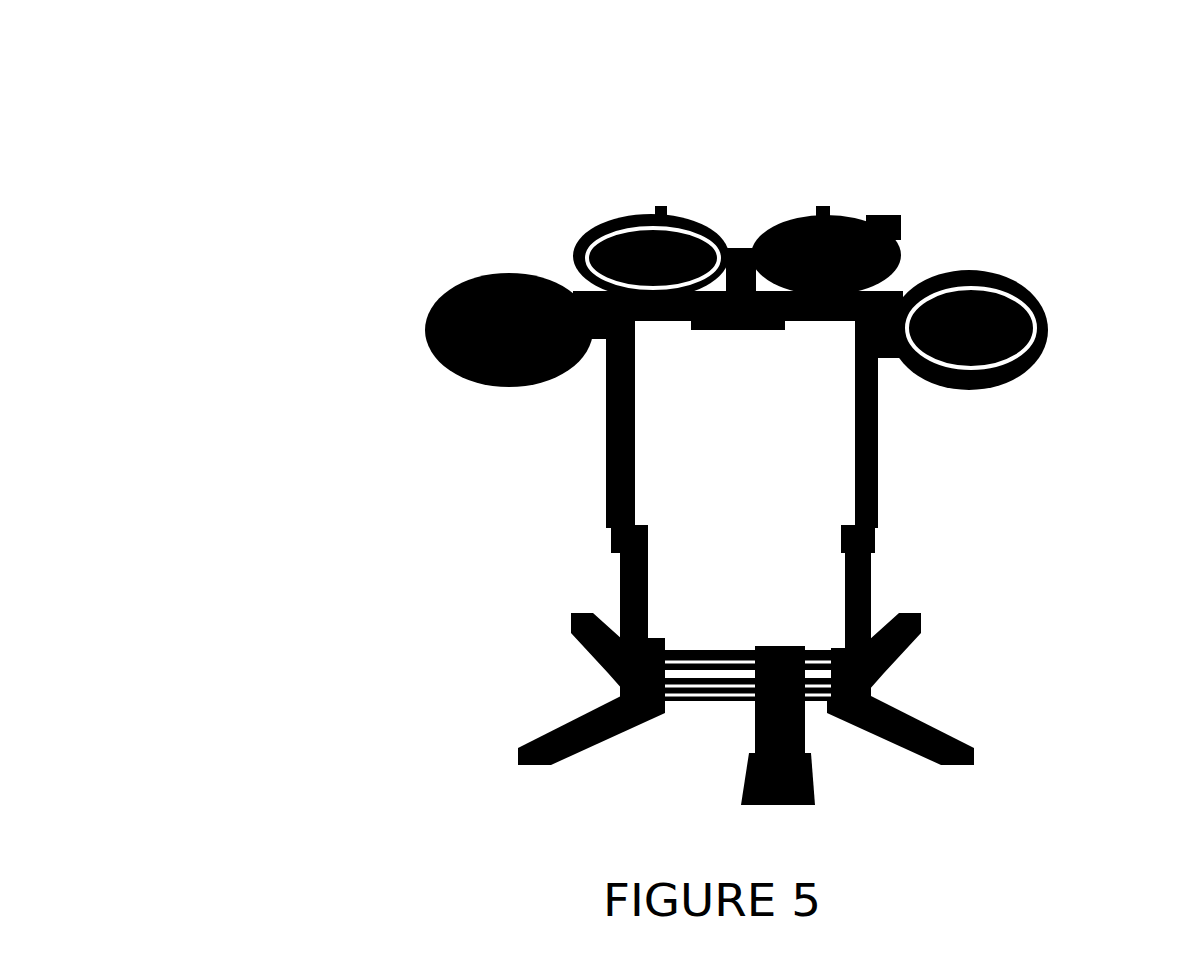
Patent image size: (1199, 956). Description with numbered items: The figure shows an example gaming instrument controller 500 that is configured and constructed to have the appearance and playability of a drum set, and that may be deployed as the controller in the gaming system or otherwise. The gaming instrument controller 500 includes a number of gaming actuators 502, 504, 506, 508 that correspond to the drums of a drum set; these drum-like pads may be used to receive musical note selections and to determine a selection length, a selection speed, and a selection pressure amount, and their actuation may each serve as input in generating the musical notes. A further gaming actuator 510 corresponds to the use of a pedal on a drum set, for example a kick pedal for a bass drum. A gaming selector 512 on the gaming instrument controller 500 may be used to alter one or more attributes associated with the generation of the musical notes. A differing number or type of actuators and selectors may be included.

The gaming instrument controller 500 is at (160, 72).
The gaming actuator 502 is at (475, 266).
The gaming actuator 504 is at (646, 199).
The gaming actuator 506 is at (845, 225).
The gaming actuator 508 is at (973, 266).
The gaming actuator 510 is at (797, 652).
The gaming selector 512 is at (736, 242).